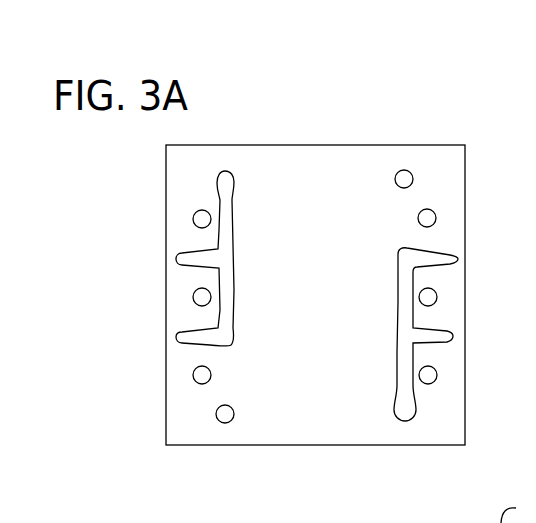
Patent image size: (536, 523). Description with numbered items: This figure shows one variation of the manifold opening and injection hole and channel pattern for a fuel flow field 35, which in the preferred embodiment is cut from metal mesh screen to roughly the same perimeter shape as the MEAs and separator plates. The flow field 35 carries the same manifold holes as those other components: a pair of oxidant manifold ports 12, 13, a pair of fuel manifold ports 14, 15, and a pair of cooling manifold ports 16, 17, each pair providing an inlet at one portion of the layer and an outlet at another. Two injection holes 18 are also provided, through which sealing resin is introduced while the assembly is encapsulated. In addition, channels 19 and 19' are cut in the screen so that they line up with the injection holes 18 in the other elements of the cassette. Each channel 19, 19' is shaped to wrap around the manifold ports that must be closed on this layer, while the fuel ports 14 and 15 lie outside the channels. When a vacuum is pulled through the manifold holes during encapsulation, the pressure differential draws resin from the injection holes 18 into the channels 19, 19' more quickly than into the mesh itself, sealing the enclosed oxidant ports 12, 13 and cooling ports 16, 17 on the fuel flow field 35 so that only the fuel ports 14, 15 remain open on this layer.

The oxidant manifold port 12 is at (447, 375).
The oxidant manifold port 13 is at (184, 219).
The fuel manifold port 14 is at (446, 218).
The fuel manifold port 15 is at (184, 375).
The cooling manifold port 16 is at (447, 297).
The cooling manifold port 17 is at (184, 297).
The injection hole 18 is at (207, 415).
The channel 19 is at (171, 257).
The channel 19' is at (463, 333).
The fuel flow field 35 is at (52, 285).